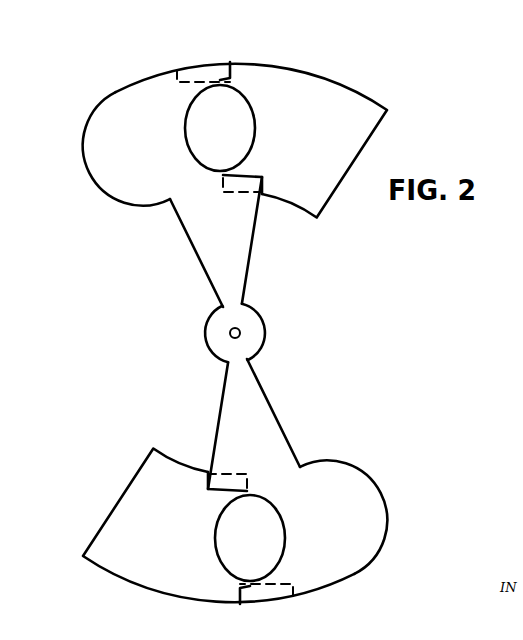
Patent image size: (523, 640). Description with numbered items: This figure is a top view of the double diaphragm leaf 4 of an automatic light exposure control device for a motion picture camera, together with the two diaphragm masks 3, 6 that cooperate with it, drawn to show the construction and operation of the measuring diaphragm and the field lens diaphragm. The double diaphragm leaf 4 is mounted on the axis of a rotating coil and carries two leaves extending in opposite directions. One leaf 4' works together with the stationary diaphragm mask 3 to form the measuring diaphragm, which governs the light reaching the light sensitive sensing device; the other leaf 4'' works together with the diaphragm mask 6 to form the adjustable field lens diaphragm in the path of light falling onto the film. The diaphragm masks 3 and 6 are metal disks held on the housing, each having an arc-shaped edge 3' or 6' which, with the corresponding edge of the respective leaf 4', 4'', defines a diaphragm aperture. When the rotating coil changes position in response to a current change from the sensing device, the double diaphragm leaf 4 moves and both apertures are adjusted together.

The diaphragm mask 6 is at (255, 122).
The arc-shaped edge 6' is at (261, 99).
The double diaphragm leaf 4 is at (238, 333).
The leaf 4'' is at (109, 173).
The leaf 4' is at (358, 532).
The stationary diaphragm mask 3 is at (204, 536).
The arc-shaped edge 3' is at (203, 559).